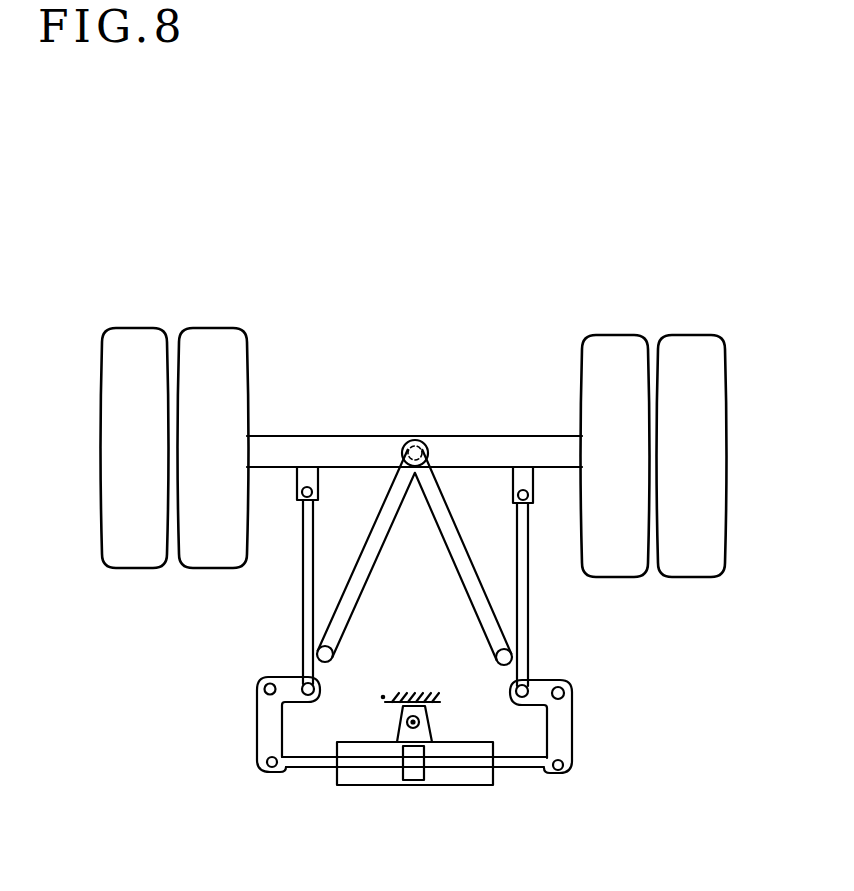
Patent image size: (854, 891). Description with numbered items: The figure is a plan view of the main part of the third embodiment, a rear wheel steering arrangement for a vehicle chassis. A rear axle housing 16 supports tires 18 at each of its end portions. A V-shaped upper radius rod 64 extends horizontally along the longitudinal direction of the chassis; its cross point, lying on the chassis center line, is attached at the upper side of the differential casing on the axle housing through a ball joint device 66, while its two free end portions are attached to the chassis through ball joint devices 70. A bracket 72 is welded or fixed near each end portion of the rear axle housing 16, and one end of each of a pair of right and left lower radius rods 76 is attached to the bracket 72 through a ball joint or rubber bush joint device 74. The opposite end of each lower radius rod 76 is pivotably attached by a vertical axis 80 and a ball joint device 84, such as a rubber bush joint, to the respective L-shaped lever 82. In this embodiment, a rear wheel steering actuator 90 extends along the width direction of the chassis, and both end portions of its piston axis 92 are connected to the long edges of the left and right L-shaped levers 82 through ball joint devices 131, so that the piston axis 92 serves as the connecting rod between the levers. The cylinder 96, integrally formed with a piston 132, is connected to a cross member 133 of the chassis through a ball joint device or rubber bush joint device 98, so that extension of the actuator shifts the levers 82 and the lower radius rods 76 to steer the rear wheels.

The rear axle housing 16 is at (478, 452).
The tires 18 is at (222, 352).
The upper radius rod 64 is at (367, 568).
The ball joint device 66 is at (411, 441).
The ball joint device or rubber bush joint device 70 is at (498, 655).
The bracket 72 is at (314, 487).
The ball joint or rubber bush joint device 74 is at (306, 487).
The lower radius rods 76 is at (303, 581).
The vertical axes 80 is at (262, 687).
The L-shaped lever 82 is at (266, 712).
The ball joint devices 84 is at (517, 695).
The rear wheel steering actuator 90 is at (414, 758).
The piston axis 92 is at (312, 769).
The cylinder 96 is at (364, 786).
The ball joint device or rubber bush joint device 98 is at (408, 722).
The ball joint devices 131 is at (264, 766).
The piston 132 is at (415, 772).
The cross member 133 is at (402, 699).